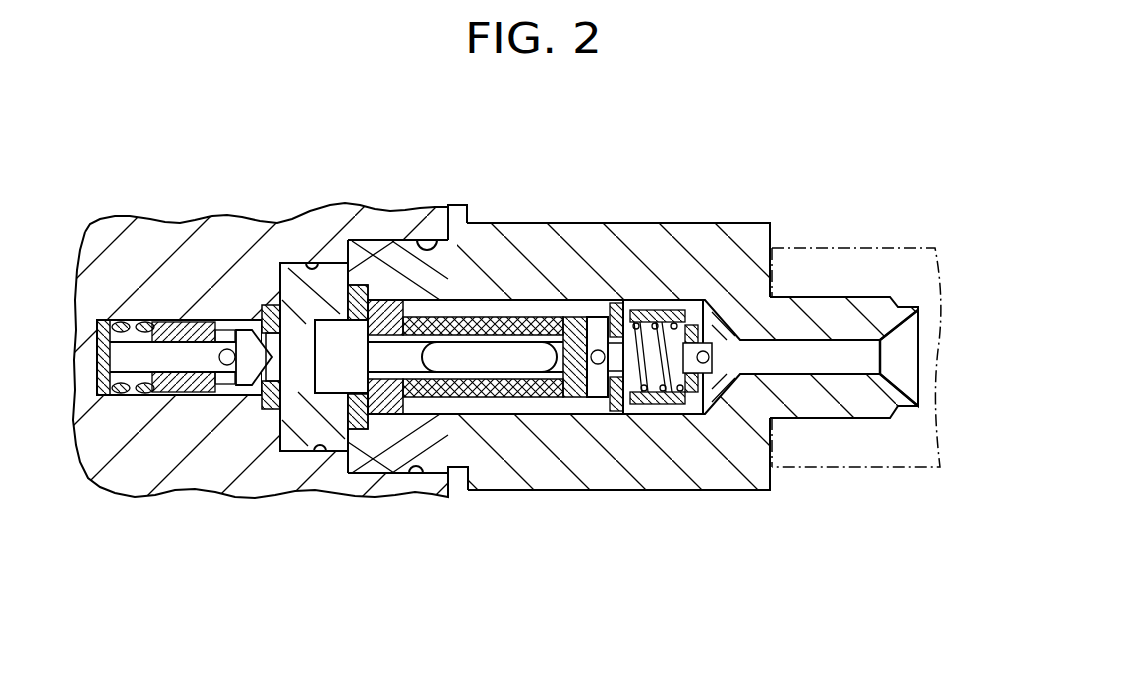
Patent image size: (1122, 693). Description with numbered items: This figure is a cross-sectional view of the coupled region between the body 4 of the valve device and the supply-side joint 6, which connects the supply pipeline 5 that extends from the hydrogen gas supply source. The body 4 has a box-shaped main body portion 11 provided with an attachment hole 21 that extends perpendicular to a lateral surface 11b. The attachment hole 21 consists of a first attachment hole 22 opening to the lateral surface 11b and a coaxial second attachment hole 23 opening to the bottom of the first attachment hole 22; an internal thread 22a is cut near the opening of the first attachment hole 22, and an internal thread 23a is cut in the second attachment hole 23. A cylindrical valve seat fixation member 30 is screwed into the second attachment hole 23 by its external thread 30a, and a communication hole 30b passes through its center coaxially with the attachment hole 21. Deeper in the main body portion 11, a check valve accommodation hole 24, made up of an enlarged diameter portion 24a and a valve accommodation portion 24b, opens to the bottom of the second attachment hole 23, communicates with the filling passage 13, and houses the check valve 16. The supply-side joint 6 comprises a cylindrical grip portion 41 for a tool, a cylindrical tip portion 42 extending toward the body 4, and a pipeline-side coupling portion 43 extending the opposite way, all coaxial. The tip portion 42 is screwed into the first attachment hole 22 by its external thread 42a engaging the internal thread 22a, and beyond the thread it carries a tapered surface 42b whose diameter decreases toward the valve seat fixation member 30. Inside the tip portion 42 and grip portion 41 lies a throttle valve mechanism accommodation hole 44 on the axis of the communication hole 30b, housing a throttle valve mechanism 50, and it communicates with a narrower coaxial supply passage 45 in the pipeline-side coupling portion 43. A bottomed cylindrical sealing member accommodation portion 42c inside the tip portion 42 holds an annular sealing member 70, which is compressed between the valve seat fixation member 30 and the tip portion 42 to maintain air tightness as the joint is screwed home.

The body 4 is at (270, 318).
The supply pipeline 5 is at (843, 468).
The supply-side joint 6 is at (882, 191).
The main body portion 11 is at (223, 218).
The lateral surface 11b is at (463, 206).
The filling passage 13 is at (96, 330).
The check valve 16 is at (165, 310).
The attachment hole 21 is at (358, 336).
The first attachment hole 22 is at (408, 341).
The internal thread 22a is at (449, 474).
The second attachment hole 23 is at (333, 340).
The internal thread 23a is at (326, 458).
The check valve accommodation hole 24 is at (226, 464).
The enlarged diameter portion 24a is at (257, 407).
The valve accommodation portion 24b is at (205, 396).
The valve seat fixation member 30 is at (315, 336).
The external thread 30a is at (343, 258).
The communication hole 30b is at (297, 455).
The grip portion 41 is at (637, 233).
The tip portion 42 is at (469, 324).
The external thread 42a is at (419, 240).
The tapered surface 42b is at (384, 467).
The sealing member accommodation portion 42c is at (371, 419).
The pipeline-side coupling portion 43 is at (843, 316).
The throttle valve mechanism accommodation hole 44 is at (578, 298).
The supply passage 45 is at (866, 350).
The throttle valve mechanism 50 is at (686, 294).
The sealing member 70 is at (370, 297).